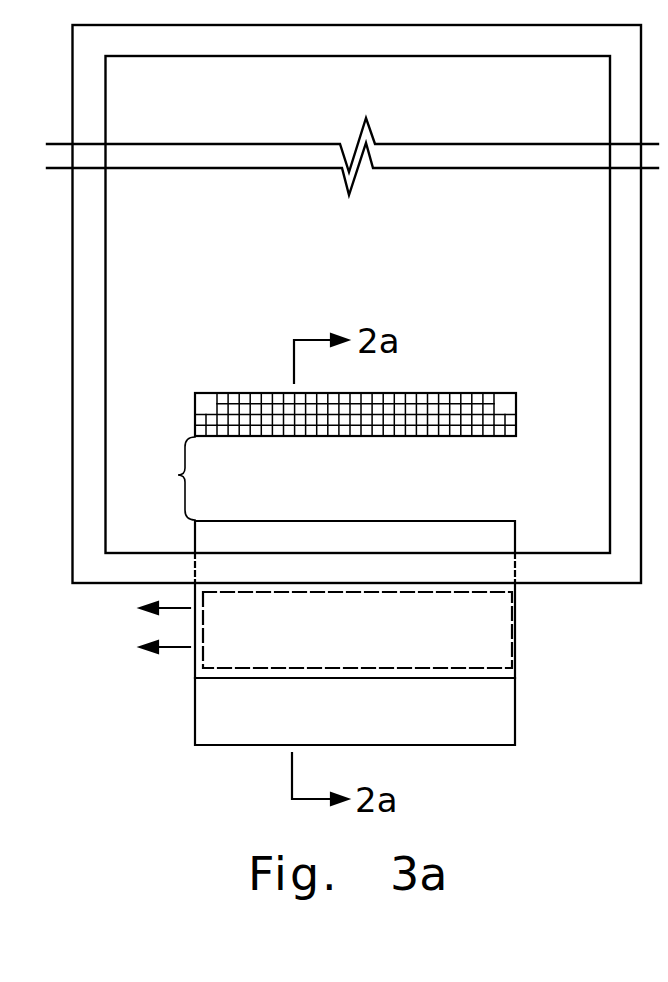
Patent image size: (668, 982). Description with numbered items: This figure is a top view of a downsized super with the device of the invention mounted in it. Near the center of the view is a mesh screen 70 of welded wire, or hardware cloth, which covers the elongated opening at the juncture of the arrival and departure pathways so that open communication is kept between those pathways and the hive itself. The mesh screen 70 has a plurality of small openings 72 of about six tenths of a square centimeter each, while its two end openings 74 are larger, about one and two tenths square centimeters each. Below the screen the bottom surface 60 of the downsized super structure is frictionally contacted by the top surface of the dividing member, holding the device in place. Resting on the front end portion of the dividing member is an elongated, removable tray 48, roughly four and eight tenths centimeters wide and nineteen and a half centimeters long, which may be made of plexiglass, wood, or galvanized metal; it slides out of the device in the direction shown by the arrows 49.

The tray 48 is at (481, 640).
The arrows 49 is at (166, 649).
The bottom surface of down sized super structure 60 is at (170, 478).
The mesh screen 70 is at (505, 393).
The openings 72 is at (391, 448).
The end openings 74 is at (195, 398).